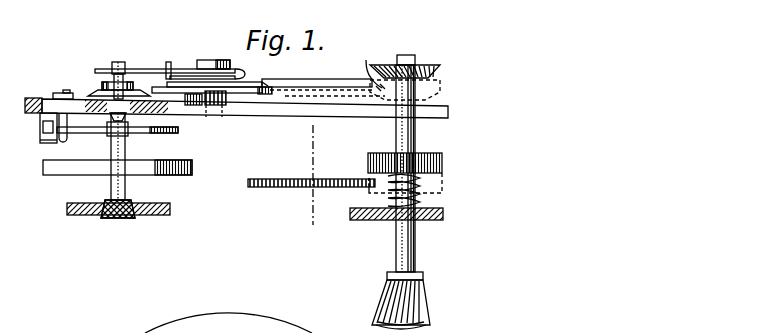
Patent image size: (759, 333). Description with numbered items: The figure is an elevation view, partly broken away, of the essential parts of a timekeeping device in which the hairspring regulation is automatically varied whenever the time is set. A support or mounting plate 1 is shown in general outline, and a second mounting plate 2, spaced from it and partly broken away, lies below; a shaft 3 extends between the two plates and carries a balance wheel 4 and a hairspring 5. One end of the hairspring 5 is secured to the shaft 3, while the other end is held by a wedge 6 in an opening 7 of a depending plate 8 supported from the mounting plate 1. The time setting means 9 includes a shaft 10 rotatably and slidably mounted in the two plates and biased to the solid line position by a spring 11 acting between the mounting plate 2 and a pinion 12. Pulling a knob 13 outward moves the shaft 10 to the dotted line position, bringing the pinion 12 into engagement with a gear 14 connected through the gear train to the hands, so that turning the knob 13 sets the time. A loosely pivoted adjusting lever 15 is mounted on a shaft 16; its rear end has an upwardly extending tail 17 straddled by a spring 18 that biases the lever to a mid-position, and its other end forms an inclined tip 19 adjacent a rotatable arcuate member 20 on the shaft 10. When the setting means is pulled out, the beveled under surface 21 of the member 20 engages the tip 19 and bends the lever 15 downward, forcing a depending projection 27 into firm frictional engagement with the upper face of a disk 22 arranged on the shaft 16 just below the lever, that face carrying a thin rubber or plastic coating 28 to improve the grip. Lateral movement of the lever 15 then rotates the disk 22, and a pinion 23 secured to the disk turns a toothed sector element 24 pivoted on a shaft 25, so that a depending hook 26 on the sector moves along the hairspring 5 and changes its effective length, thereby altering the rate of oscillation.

The mounting plate 1 is at (448, 110).
The second mounting plate 2 is at (77, 212).
The shaft 3 is at (110, 190).
The balance wheel 4 is at (190, 165).
The hairspring 5 is at (147, 133).
The wedge 6 is at (45, 128).
The opening 7 is at (43, 122).
The depending plate 8 is at (45, 140).
The time setting means 9 is at (415, 255).
The shaft 10 is at (395, 243).
The spring 11 is at (420, 202).
The pinion 12 is at (442, 160).
The knob 13 is at (425, 310).
The gear 14 is at (280, 186).
The adjusting lever 15 is at (331, 86).
The shaft 16 is at (233, 78).
The tail 17 is at (169, 63).
The spring 18 is at (101, 69).
The tip 19 is at (374, 68).
The rotatable arcuate member 20 is at (440, 68).
The beveled under surface 21 is at (440, 81).
The disk 22 is at (272, 91).
The pinion 23 is at (214, 105).
The sector element 24 is at (187, 104).
The shaft 25 is at (120, 62).
The hook 26 is at (66, 136).
The projection 27 is at (265, 86).
The coating 28 is at (154, 87).